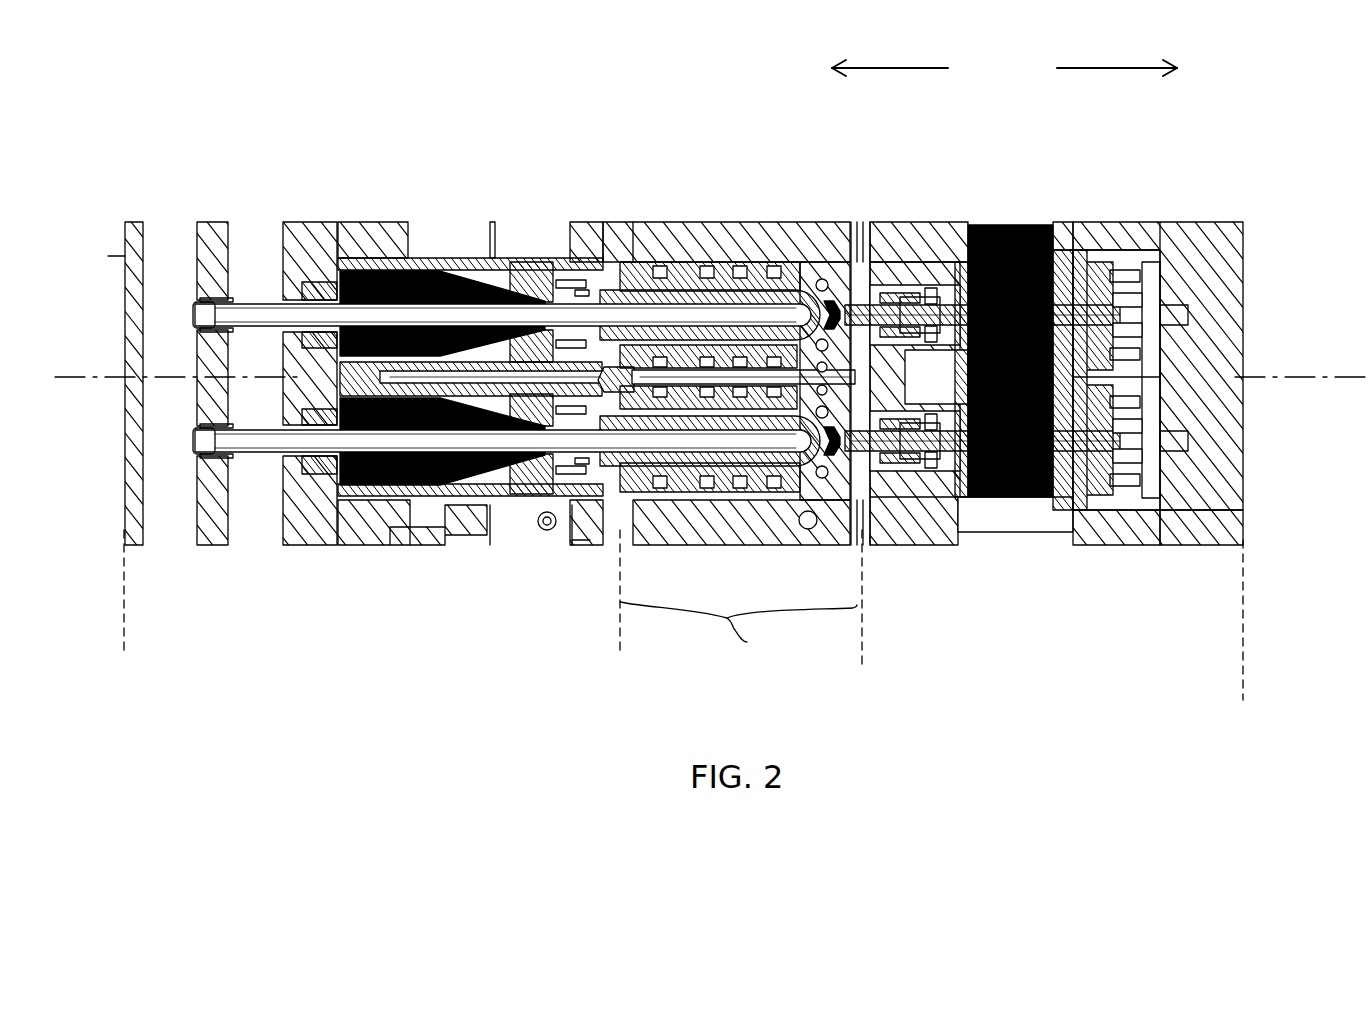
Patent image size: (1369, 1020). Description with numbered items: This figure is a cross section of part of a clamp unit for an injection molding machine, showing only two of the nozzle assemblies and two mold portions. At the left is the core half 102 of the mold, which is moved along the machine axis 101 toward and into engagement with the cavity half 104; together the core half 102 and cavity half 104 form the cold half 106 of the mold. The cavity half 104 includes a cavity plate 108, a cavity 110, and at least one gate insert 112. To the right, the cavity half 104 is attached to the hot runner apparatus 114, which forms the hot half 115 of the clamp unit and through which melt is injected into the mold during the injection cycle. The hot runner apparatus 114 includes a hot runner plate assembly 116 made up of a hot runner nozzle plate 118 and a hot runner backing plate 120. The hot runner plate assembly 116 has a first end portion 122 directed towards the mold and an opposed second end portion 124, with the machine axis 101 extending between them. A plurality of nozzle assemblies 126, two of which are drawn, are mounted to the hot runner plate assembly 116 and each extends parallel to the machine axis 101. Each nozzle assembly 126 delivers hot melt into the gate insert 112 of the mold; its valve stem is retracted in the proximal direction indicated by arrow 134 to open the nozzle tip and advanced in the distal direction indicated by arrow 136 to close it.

The machine axis 101 is at (90, 393).
The core half 102 is at (125, 578).
The cavity half 104 is at (684, 437).
The cold half 106 is at (125, 633).
The cavity plate 108 is at (697, 233).
The cavity 110 is at (738, 487).
The gate insert 112 is at (800, 487).
The hot runner apparatus 114 is at (1094, 559).
The hot half 115 is at (862, 658).
The hot runner plate assembly 116 is at (1200, 237).
The hot runner nozzle plate 118 is at (883, 530).
The hot runner backing plate 120 is at (1195, 522).
The first end portion 122 is at (888, 236).
The second end portion 124 is at (1221, 528).
The nozzle assembly 126 is at (938, 240).
The arrow indicating proximal direction 134 is at (1107, 67).
The arrow indicating distal direction 136 is at (882, 67).